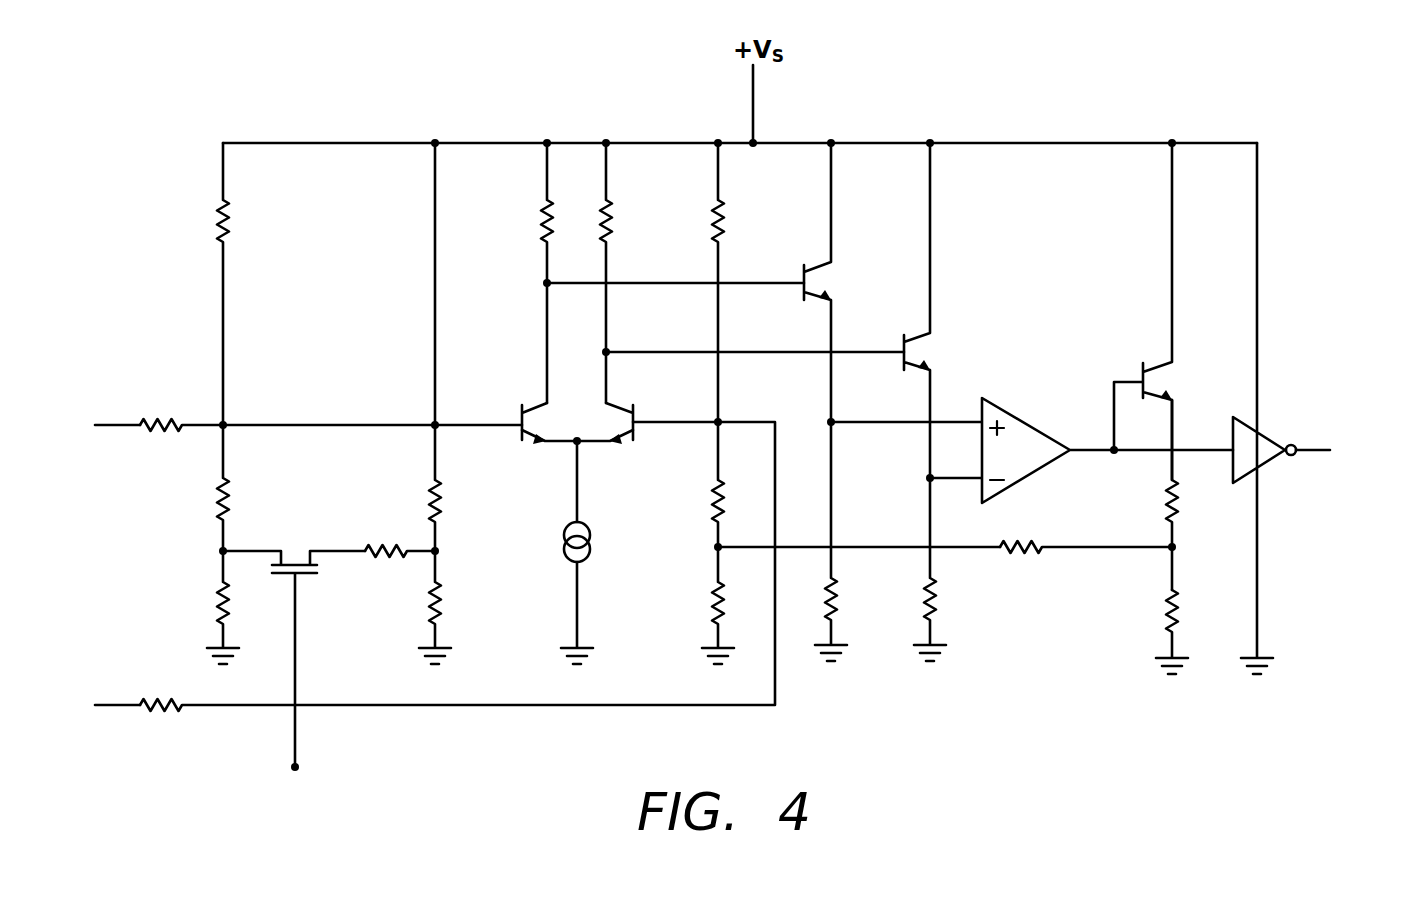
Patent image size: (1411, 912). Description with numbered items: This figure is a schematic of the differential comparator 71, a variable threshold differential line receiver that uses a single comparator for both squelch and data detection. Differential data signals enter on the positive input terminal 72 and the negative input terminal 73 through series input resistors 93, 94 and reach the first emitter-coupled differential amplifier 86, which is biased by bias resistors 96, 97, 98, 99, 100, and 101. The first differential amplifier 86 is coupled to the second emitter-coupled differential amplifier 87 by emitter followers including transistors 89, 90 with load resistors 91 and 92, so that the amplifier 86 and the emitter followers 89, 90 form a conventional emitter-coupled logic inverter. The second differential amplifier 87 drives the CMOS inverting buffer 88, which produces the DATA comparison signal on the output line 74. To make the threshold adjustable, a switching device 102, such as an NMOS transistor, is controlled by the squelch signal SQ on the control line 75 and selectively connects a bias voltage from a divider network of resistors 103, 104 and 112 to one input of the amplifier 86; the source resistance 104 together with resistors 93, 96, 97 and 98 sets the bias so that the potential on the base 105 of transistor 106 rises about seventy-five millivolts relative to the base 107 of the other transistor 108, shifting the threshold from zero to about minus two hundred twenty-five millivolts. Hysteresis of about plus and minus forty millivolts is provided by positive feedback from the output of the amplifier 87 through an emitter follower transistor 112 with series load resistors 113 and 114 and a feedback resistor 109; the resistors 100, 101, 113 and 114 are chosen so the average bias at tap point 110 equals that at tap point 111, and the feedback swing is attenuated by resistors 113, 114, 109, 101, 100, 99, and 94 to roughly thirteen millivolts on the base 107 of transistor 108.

The differential comparator 71 is at (1310, 108).
The positive input terminal 72 is at (112, 424).
The negative input terminal 73 is at (112, 704).
The output line 74 is at (1330, 452).
The control line 75 is at (297, 738).
The first emitter-coupled differential amplifier 86 is at (532, 372).
The second emitter-coupled differential amplifier 87 is at (1012, 417).
The CMOS inverting buffer 88 is at (1265, 437).
The emitter follower transistor 89 is at (804, 281).
The emitter follower transistor 90 is at (904, 348).
The load resistor 91 is at (833, 598).
The load resistor 92 is at (932, 598).
The series input resistor 93 is at (163, 420).
The series input resistor 94 is at (163, 700).
The bias resistor 96 is at (223, 213).
The bias resistor 97 is at (223, 499).
The bias resistor 98 is at (223, 604).
The bias resistor 99 is at (718, 219).
The bias resistor 100 is at (718, 497).
The bias resistor 101 is at (718, 600).
The switching device 102 is at (311, 576).
The voltage divider resistor 103 is at (440, 497).
The source resistance 104 is at (440, 600).
The base 105 is at (469, 423).
The transistor 106 is at (518, 443).
The base 107 is at (664, 438).
The transistor 108 is at (637, 412).
The feedback resistor 109 is at (1035, 551).
The tap point 110 is at (718, 553).
The tap point 111 is at (1172, 553).
The emitter follower transistor 112 is at (392, 545).
The load resistor 113 is at (1172, 497).
The load resistor 114 is at (1172, 612).